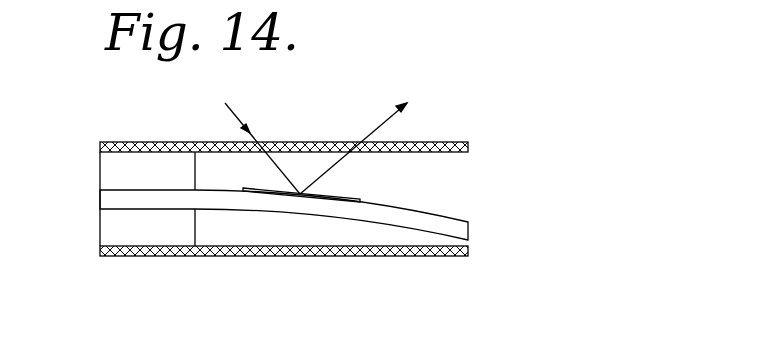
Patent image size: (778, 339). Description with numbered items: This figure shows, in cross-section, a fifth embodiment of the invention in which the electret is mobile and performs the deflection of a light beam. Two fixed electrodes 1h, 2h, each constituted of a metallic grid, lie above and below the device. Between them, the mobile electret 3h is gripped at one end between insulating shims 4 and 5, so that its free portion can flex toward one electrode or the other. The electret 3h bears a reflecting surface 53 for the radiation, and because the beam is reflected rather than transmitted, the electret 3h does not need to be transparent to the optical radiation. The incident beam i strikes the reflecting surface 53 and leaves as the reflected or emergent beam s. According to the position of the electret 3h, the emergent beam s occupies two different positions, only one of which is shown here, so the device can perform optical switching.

The fixed electrode 1h is at (150, 131).
The fixed electrode 2h is at (318, 249).
The electret 3h is at (240, 200).
The insulating shim 4 is at (118, 165).
The insulating shim 5 is at (112, 226).
The reflecting surface 53 is at (345, 197).
The incident beam i is at (262, 139).
The emergent beam s is at (362, 139).